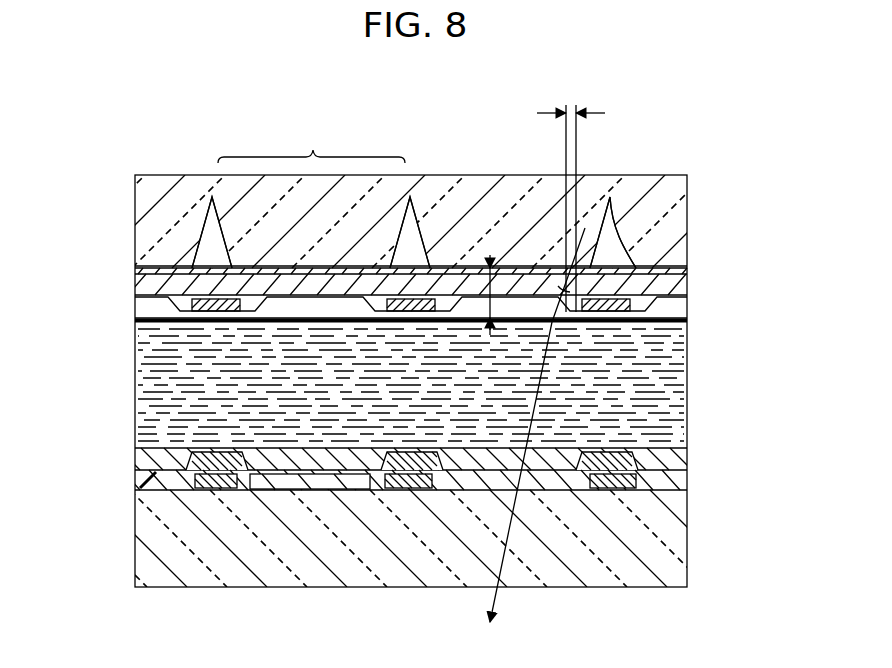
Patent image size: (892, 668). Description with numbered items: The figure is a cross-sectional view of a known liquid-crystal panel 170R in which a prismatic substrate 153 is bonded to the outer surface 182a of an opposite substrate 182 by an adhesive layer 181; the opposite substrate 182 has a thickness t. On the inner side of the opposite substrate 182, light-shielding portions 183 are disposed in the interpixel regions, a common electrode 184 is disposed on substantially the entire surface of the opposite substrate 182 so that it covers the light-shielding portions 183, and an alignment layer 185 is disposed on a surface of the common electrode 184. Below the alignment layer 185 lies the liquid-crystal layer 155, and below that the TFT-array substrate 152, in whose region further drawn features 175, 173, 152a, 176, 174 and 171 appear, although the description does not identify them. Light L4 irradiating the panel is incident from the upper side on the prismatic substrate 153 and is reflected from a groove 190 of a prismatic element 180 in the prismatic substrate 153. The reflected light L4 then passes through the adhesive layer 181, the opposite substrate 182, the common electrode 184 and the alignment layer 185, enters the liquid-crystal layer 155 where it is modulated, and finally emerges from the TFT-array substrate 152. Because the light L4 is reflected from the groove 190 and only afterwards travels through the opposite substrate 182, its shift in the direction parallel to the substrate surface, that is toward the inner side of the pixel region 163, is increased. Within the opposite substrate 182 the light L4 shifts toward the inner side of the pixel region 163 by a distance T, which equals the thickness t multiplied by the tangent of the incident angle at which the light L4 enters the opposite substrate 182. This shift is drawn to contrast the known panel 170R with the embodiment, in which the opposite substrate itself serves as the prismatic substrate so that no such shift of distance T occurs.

The liquid-crystal panel 170R is at (683, 152).
The prismatic substrate 153 is at (687, 200).
The groove 190 is at (204, 242).
The prismatic element 180 is at (198, 214).
The pixel region 163 is at (311, 141).
The adhesive layer 181 is at (136, 271).
The opposite substrate 182 is at (150, 287).
The outer surface 182a is at (687, 265).
The light-shielding portions 183 is at (200, 305).
The common electrode 184 is at (687, 300).
The alignment layer 185 is at (687, 313).
The liquid-crystal layer 155 is at (687, 360).
The passivation layer 175 is at (687, 452).
The pixel electrode 173 is at (200, 455).
The insulating layer on lower substrate 152a is at (687, 478).
The contact portion 176 is at (140, 478).
The data line / electrode 174 is at (285, 492).
The gate electrode 171 is at (610, 492).
The TFT-array substrate 152 is at (687, 530).
The shift distance T is at (575, 105).
The thickness t is at (490, 255).
The light L4 is at (565, 300).